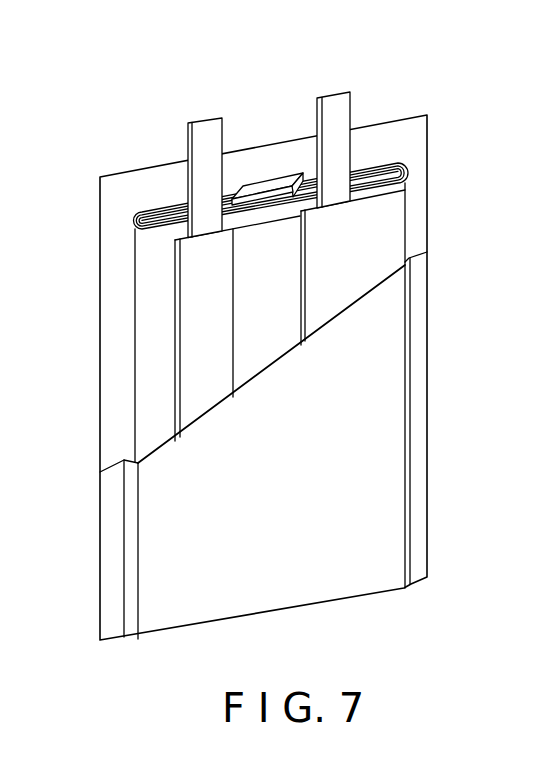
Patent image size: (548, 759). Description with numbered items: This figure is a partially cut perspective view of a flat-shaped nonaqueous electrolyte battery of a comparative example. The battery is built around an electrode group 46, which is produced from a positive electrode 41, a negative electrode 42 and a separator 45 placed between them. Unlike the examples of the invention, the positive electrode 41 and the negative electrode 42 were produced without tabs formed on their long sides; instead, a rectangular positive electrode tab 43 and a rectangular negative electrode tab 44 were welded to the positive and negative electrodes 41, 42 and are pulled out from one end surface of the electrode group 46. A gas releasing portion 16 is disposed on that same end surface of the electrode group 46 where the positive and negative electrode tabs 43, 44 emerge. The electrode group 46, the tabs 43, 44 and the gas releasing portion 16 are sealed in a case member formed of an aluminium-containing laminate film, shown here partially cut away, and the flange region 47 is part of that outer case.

The gas releasing portion 16 is at (274, 190).
The positive electrode 41 is at (193, 275).
The negative electrode 42 is at (390, 222).
The positive electrode tab 43 is at (208, 122).
The negative electrode tab 44 is at (338, 94).
The separator 45 is at (143, 348).
The electrode group 46 is at (135, 320).
The folded flange portion 47 is at (385, 373).